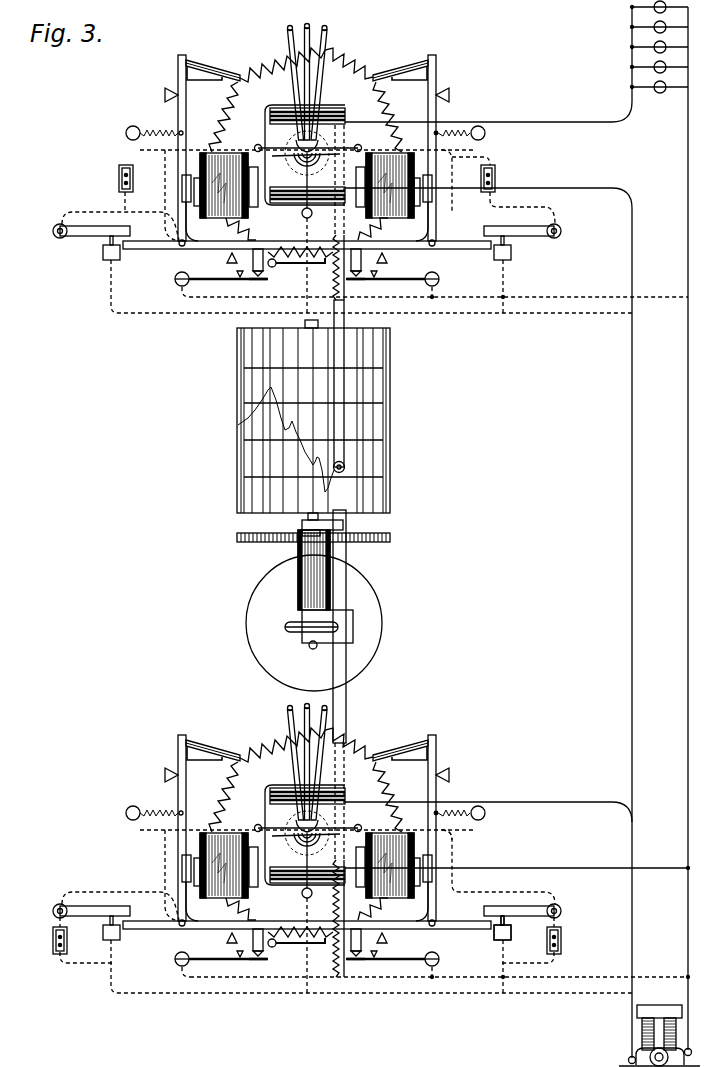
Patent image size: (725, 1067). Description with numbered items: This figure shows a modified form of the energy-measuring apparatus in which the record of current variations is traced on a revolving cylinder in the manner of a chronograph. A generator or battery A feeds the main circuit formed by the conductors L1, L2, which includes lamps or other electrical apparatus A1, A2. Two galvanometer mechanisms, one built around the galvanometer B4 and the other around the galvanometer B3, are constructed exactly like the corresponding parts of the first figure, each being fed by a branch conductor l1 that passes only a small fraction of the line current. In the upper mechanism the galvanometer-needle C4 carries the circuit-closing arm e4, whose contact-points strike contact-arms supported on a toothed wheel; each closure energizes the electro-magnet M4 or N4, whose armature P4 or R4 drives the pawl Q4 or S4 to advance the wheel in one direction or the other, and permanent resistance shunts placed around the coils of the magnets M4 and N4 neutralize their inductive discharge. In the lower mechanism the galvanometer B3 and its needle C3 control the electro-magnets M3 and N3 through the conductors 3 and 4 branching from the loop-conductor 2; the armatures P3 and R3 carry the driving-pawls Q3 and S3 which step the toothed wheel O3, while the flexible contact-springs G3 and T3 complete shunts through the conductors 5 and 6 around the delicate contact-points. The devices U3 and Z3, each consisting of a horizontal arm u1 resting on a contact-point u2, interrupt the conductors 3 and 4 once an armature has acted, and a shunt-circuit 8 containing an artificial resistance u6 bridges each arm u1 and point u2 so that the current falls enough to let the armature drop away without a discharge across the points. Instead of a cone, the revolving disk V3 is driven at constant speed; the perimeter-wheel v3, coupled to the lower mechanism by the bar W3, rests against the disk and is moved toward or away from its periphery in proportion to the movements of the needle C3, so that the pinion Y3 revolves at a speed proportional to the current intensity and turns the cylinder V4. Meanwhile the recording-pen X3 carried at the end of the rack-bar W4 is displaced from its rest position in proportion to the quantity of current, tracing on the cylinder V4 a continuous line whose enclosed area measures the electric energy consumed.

The circuit-closing arm e4 is at (308, 77).
The driving-pawl S4 is at (224, 70).
The driving-pawl Q4 is at (406, 70).
The galvanometer B4 is at (286, 108).
The electro-magnet N4 is at (224, 160).
The electro-magnet M4 is at (375, 178).
The galvanometer-needle C4 is at (300, 160).
The armature R4 is at (182, 188).
The armature P4 is at (432, 186).
The main-line conductor L1 is at (488, 532).
The main-line conductor L2 is at (678, 528).
The electric lamp A1 is at (645, 84).
The electric lamp A2 is at (645, 37).
The rack-bar W4 is at (345, 351).
The cylinder V4 is at (237, 395).
The recording-pen X3 is at (345, 467).
The pinion Y3 is at (298, 555).
The revolving disk V3 is at (262, 606).
The perimeter-wheel v3 is at (286, 629).
The rod W3 is at (347, 728).
The driving-pawl S3 is at (213, 744).
The driving-pawl Q3 is at (400, 744).
The toothed wheel O3 is at (377, 841).
The galvanometer B3 is at (305, 826).
The electro-magnet N3 is at (224, 853).
The electro-magnet M3 is at (390, 853).
The galvanometer-needle C3 is at (308, 854).
The armature R3 is at (171, 886).
The armature P3 is at (441, 885).
The circuit-interrupting device Z3 is at (82, 905).
The circuit-interrupting device U3 is at (533, 905).
The arm u1 is at (307, 919).
The resting contact-point u2 is at (307, 935).
The artificial resistance u6 is at (310, 940).
The flexible contact-spring T3 is at (221, 952).
The flexible contact-spring G3 is at (392, 952).
The electric generator A is at (659, 1026).
The loop-conductor 2 is at (440, 969).
The conductor 3 is at (498, 911).
The conductor 4 is at (347, 935).
The shunt conductor 5 is at (449, 899).
The shunt conductor 6 is at (195, 899).
The shunt-circuit 8 is at (309, 947).
The branch conductor l1 is at (517, 827).